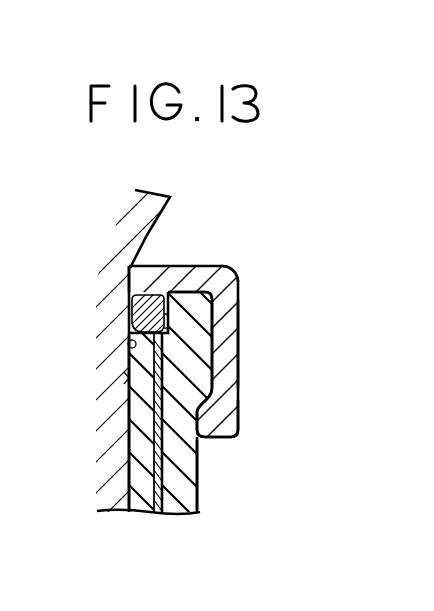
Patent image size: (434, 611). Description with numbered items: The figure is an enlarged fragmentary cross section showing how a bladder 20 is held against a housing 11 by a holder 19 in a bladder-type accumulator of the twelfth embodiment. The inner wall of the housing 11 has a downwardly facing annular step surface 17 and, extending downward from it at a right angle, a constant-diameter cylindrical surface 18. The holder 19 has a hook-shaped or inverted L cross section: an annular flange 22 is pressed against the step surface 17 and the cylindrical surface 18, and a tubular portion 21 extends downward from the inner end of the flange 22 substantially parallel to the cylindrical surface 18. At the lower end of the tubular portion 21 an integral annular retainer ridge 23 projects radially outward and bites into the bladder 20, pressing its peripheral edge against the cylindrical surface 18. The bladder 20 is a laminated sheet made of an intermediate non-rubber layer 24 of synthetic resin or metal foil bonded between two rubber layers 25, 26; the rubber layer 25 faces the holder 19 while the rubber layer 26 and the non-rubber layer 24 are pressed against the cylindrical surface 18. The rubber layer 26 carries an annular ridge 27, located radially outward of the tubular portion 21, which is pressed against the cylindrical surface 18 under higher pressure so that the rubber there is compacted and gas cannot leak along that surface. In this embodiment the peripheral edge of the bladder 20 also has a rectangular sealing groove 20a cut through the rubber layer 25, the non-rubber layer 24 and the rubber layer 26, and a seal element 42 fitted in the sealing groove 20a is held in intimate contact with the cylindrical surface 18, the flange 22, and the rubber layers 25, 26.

The housing 11 is at (136, 211).
The annular step surface 17 is at (129, 271).
The cylindrical surface 18 is at (131, 346).
The holder 19 is at (236, 305).
The bladder 20 is at (197, 497).
The sealing groove 20a is at (203, 290).
The tubular portion 21 is at (228, 372).
The annular flange 22 is at (230, 276).
The annular retainer ridge 23 is at (228, 418).
The non-rubber layer 24 is at (160, 502).
The rubber layer 25 is at (186, 463).
The rubber layer 26 is at (146, 513).
The annular ridge 27 is at (128, 378).
The seal element 42 is at (152, 298).